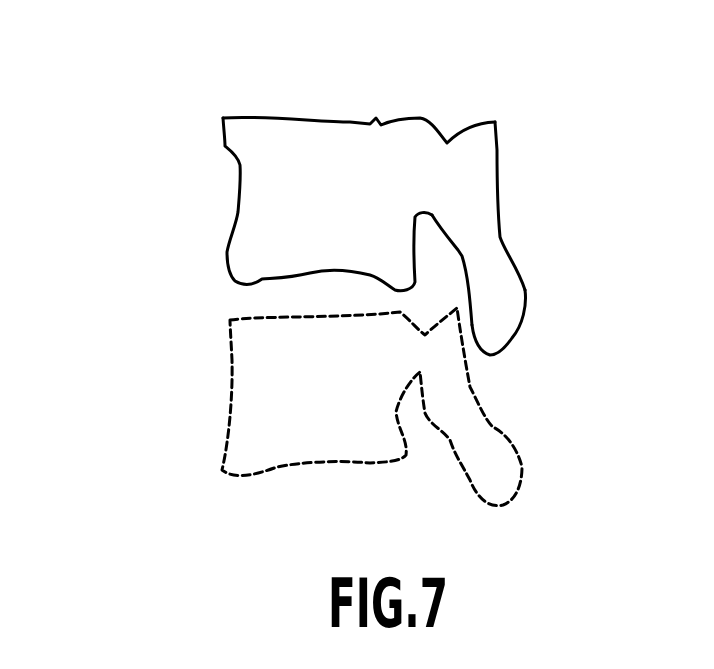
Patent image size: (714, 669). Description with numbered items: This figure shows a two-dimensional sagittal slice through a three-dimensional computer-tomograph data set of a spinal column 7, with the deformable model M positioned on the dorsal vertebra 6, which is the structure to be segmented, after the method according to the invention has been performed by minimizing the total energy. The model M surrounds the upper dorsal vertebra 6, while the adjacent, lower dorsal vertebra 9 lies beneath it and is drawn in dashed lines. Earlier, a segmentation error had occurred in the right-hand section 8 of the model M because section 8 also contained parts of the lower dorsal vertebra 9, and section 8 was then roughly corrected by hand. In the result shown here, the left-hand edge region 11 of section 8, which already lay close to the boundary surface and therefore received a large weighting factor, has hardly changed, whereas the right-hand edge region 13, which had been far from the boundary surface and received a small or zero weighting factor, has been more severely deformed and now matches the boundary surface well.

The spinal column 7 is at (152, 66).
The deformable model M is at (420, 118).
The dorsal vertebra 6 is at (238, 195).
The section of the deformable model 8 is at (500, 238).
The edge region of section 8 13 is at (526, 305).
The edge region of section 8 11 is at (470, 333).
The dorsal vertebra 9 is at (235, 384).